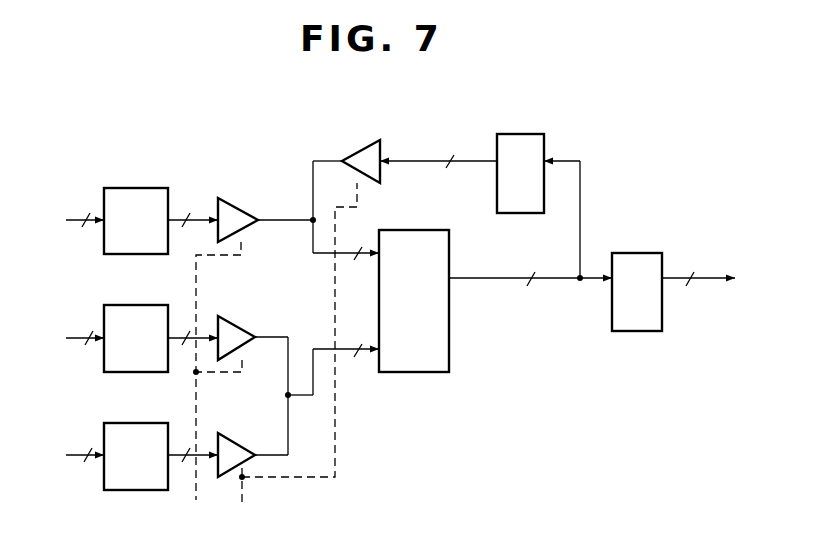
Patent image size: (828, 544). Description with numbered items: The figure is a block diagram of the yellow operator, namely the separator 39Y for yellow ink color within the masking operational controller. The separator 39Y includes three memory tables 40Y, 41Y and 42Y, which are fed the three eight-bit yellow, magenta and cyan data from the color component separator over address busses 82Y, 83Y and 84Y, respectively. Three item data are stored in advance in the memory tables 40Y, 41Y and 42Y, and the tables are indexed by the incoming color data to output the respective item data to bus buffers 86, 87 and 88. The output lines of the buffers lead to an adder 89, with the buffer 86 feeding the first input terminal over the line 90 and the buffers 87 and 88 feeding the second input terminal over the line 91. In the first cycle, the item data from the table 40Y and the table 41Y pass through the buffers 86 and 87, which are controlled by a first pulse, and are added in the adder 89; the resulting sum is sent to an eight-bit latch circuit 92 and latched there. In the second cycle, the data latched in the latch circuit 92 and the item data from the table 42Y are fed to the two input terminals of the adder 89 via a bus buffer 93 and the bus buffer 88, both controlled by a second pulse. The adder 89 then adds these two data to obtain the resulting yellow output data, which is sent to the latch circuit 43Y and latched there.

The separator 39Y is at (590, 122).
The memory table 40Y is at (136, 221).
The memory table 41Y is at (136, 338).
The memory table 42Y is at (136, 456).
The latch circuit 43Y is at (637, 253).
The address bus 82Y is at (72, 224).
The address bus 83Y is at (73, 341).
The address bus 84Y is at (72, 459).
The bus buffer 86 is at (238, 206).
The bus buffer 87 is at (241, 329).
The bus buffer 88 is at (236, 444).
The adder 89 is at (450, 349).
The D1 input bus line 90 is at (283, 222).
The D2 input bus line 91 is at (321, 349).
The latch circuit 92 is at (520, 214).
The bus buffer 93 is at (362, 148).